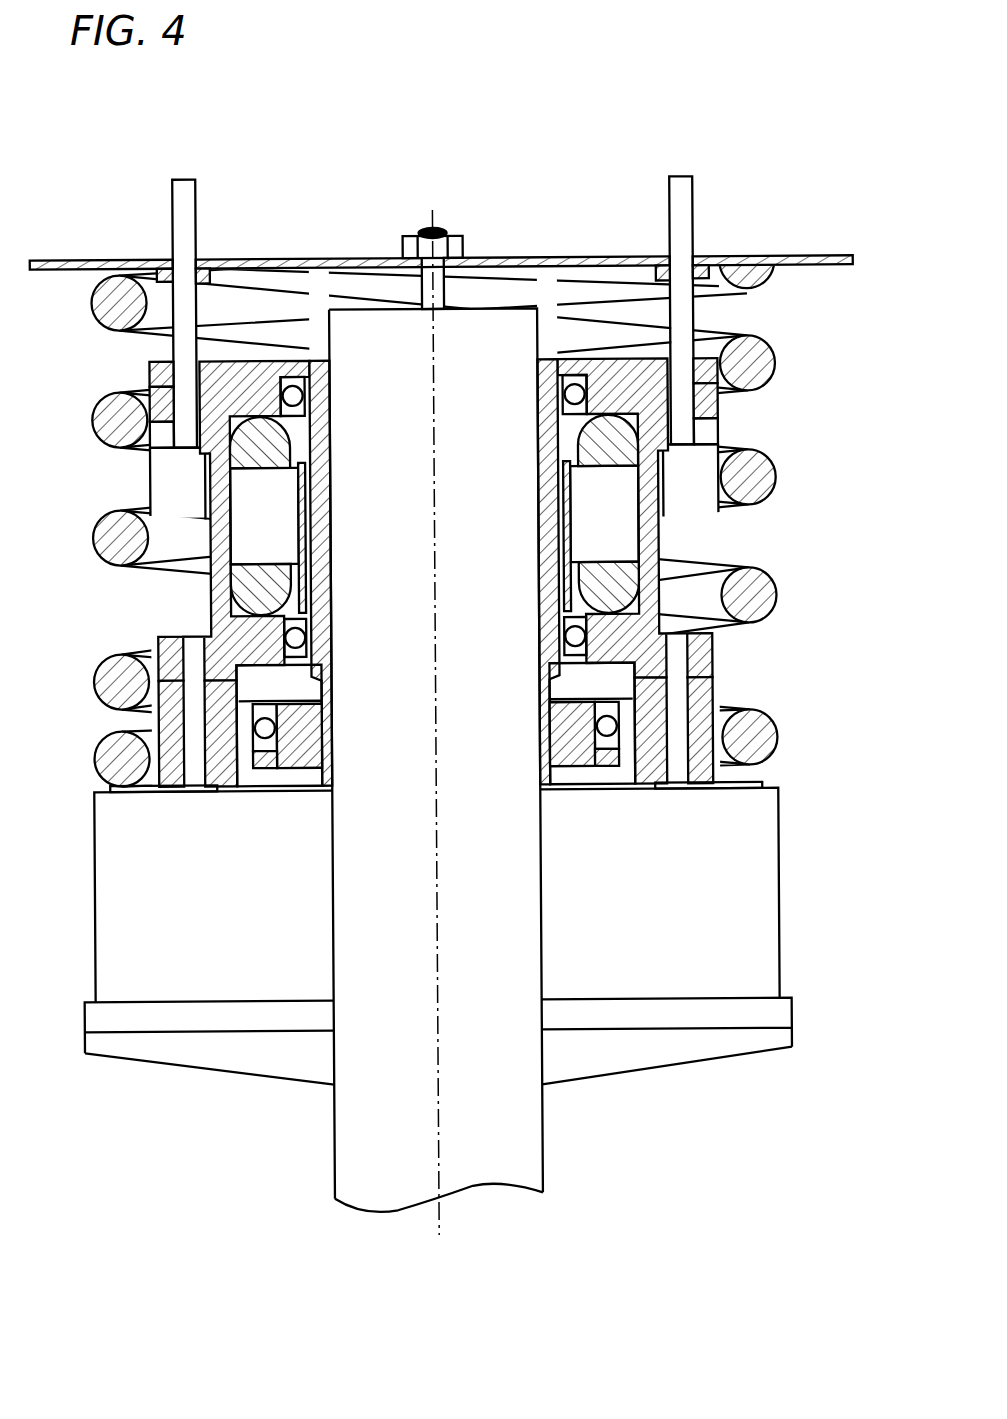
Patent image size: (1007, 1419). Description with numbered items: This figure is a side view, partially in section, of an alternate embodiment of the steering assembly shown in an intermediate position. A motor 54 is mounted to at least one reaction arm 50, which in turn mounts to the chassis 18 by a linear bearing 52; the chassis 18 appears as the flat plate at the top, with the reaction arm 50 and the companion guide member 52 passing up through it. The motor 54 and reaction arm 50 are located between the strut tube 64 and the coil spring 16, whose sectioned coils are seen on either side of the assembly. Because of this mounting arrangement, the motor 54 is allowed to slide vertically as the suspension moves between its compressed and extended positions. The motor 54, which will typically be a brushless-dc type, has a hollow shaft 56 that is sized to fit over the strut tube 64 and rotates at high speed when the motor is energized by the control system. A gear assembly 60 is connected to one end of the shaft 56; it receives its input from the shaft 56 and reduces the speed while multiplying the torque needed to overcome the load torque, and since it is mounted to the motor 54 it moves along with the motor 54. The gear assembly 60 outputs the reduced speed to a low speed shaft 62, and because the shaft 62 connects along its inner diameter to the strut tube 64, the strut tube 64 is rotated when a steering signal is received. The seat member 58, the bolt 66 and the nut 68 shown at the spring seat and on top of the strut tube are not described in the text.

The coil spring 16 is at (783, 356).
The chassis 18 is at (775, 262).
The reaction arm 50 is at (685, 315).
The linear bearing 52 is at (206, 262).
The motor 54 is at (664, 545).
The hollow shaft 56 is at (322, 784).
The spring seat plate 58 is at (685, 781).
The gear assembly 60 is at (778, 962).
The low speed shaft 62 is at (790, 1050).
The strut tube 64 is at (332, 1139).
The bolt 66 is at (446, 288).
The nut 68 is at (455, 232).